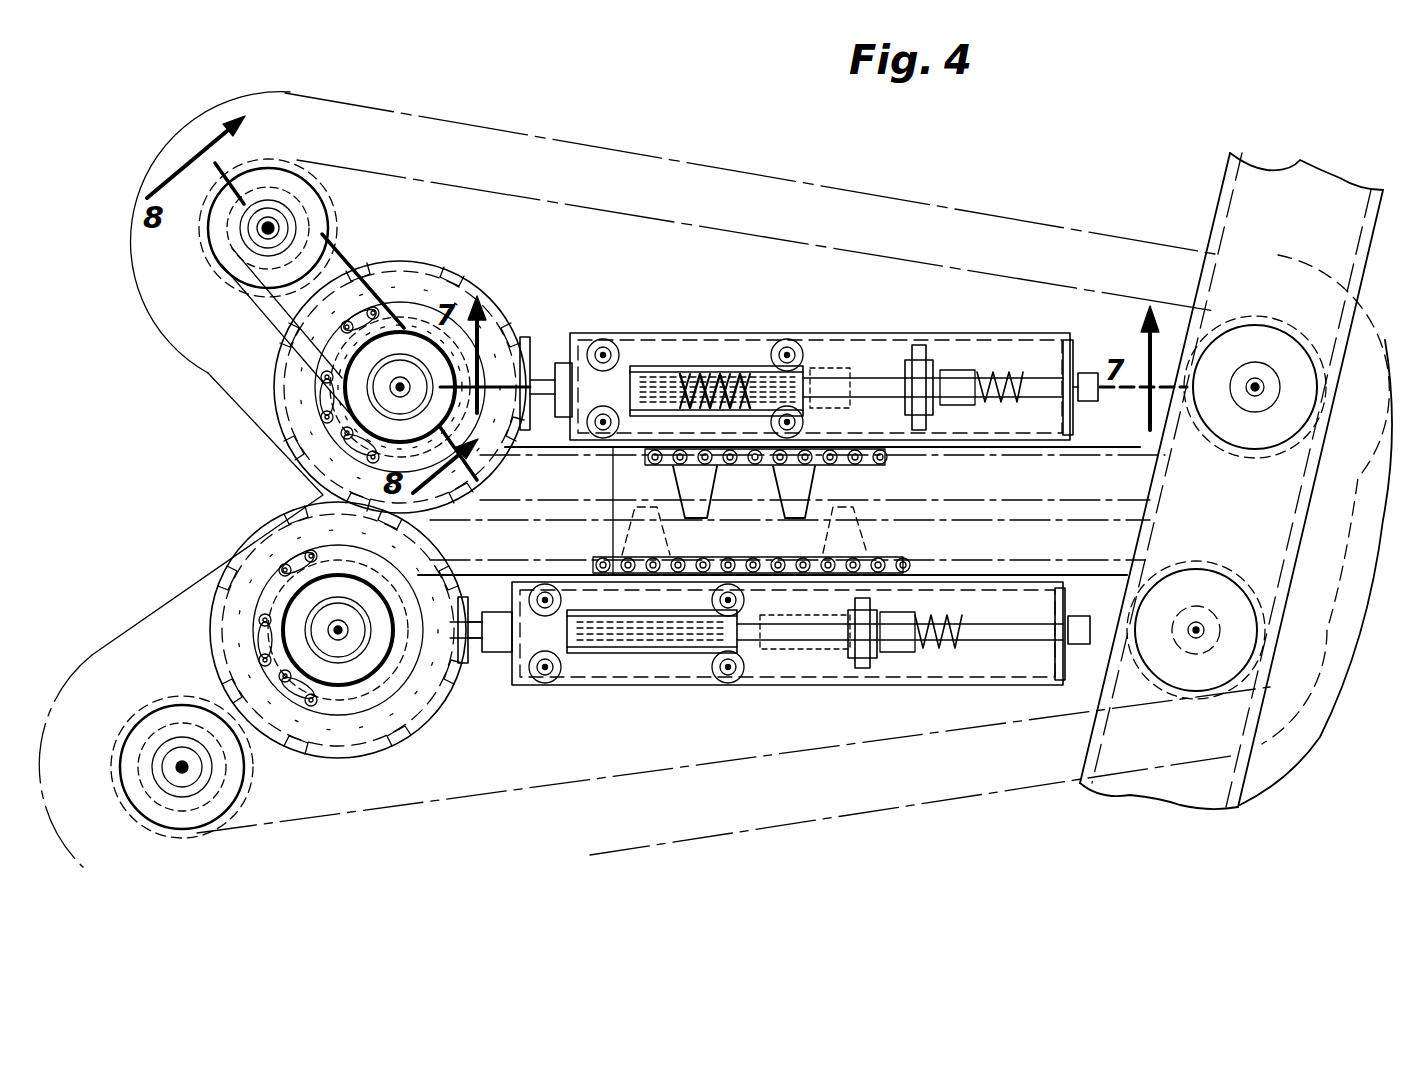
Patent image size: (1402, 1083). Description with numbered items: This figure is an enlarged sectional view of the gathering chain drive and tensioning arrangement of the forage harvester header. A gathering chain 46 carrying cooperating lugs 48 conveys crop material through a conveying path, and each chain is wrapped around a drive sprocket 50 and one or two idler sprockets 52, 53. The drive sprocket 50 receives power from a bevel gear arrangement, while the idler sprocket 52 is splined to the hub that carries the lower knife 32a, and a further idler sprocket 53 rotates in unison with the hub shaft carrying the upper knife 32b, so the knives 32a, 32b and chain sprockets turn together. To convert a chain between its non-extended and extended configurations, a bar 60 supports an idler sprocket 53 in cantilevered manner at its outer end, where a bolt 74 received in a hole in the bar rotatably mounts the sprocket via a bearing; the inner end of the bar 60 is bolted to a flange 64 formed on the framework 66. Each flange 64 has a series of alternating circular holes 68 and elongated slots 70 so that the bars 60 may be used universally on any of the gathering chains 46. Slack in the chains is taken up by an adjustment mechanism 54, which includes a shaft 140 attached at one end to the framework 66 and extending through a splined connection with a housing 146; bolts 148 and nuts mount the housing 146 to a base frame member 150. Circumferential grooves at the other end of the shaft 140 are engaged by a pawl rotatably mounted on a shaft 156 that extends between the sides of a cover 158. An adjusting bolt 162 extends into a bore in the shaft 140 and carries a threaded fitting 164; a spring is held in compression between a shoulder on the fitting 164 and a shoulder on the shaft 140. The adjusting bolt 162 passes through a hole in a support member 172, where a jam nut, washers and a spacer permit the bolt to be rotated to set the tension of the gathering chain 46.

The lower knife 32a is at (360, 758).
The upper knife 32b is at (420, 262).
The gathering chain 46 is at (882, 460).
The lug 48 is at (745, 533).
The drive sprocket 50 is at (1256, 327).
The idler sprocket 52 is at (407, 277).
The idler sprocket 53 is at (300, 178).
The adjustment mechanism 54 is at (791, 318).
The bar 60 is at (203, 313).
The flange 64 is at (340, 414).
The framework 66 is at (512, 333).
The circular hole 68 is at (330, 356).
The elongated slot 70 is at (350, 380).
The bolt 74 is at (262, 235).
The shaft 140 is at (799, 456).
The housing 146 is at (700, 366).
The bolt 148 is at (605, 340).
The base frame member 150 is at (668, 333).
The shaft 156 is at (927, 347).
The cover 158 is at (953, 363).
The adjusting bolt 162 is at (1088, 370).
The fitting 164 is at (1033, 363).
The support member 172 is at (1070, 363).